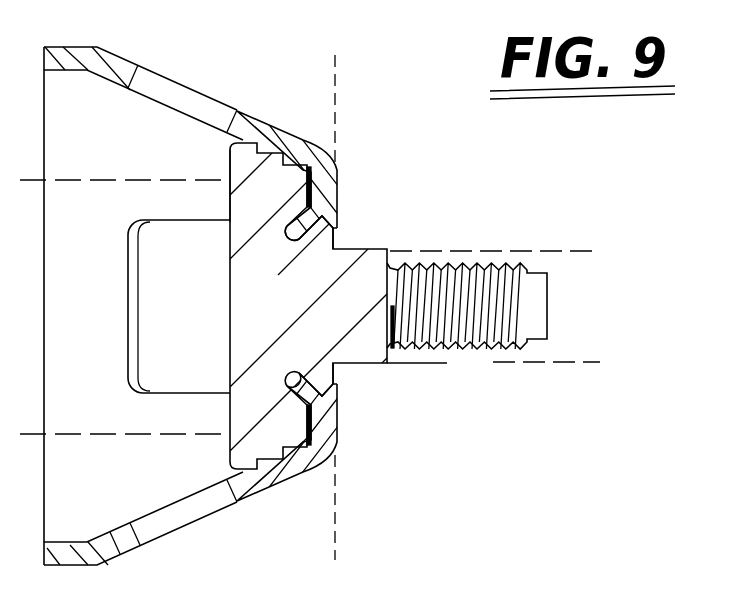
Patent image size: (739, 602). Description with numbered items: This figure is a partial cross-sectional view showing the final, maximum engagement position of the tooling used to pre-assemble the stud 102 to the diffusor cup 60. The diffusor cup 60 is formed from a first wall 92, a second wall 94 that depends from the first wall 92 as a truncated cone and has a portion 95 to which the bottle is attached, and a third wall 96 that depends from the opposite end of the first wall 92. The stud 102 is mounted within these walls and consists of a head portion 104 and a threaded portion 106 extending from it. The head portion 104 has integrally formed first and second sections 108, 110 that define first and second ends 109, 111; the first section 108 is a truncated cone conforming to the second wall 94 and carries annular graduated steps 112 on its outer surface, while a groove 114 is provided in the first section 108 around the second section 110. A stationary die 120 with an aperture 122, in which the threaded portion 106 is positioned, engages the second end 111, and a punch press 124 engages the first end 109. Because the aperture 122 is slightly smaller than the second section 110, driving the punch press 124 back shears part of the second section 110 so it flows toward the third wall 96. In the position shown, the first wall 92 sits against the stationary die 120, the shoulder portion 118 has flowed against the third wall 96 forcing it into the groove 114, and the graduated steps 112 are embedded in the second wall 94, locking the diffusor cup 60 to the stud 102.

The diffusor cup 60 is at (117, 555).
The first wall 92 is at (320, 182).
The second wall 94 is at (260, 125).
The portion 95 is at (55, 547).
The third wall 96 is at (310, 398).
The stud 102 is at (230, 450).
The head portion 104 is at (245, 340).
The threaded portion 106 is at (488, 324).
The first section 108 is at (257, 270).
The first end 109 is at (230, 203).
The second section 110 is at (360, 353).
The second end 111 is at (417, 355).
The annular graduated steps 112 is at (272, 462).
The groove 114 is at (287, 373).
The shoulder portion 118 is at (328, 242).
The stationary die 120 is at (340, 107).
The aperture 122 is at (552, 250).
The punch press 124 is at (97, 180).